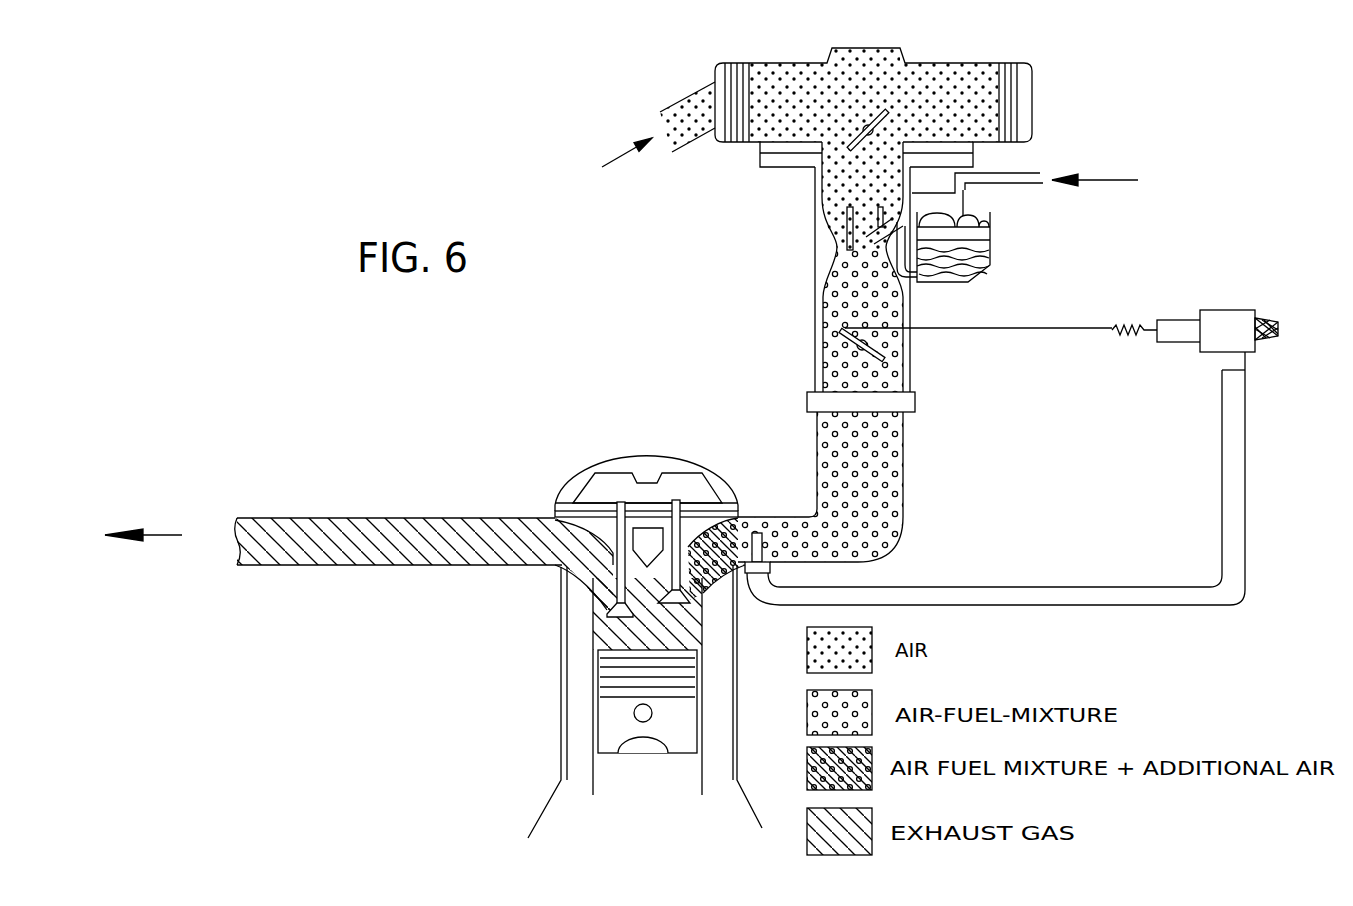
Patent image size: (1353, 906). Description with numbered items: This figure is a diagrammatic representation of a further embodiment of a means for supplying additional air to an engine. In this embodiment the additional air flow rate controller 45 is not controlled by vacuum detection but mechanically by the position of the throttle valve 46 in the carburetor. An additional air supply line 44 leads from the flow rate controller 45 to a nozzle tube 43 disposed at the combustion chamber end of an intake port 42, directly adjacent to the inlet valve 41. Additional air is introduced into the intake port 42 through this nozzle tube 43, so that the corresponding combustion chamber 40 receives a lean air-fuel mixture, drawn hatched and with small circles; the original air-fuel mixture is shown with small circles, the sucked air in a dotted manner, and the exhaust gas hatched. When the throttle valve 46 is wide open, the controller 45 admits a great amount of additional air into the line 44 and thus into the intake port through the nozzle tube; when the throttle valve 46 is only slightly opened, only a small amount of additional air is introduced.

The combustion chamber 40 is at (580, 657).
The inlet valve 41 is at (677, 507).
The intake port 42 is at (817, 556).
The nozzle tube 43 is at (762, 538).
The additional air supply line 44 is at (1080, 585).
The additional air flow rate controller 45 is at (1221, 338).
The throttle valve 46 is at (832, 342).